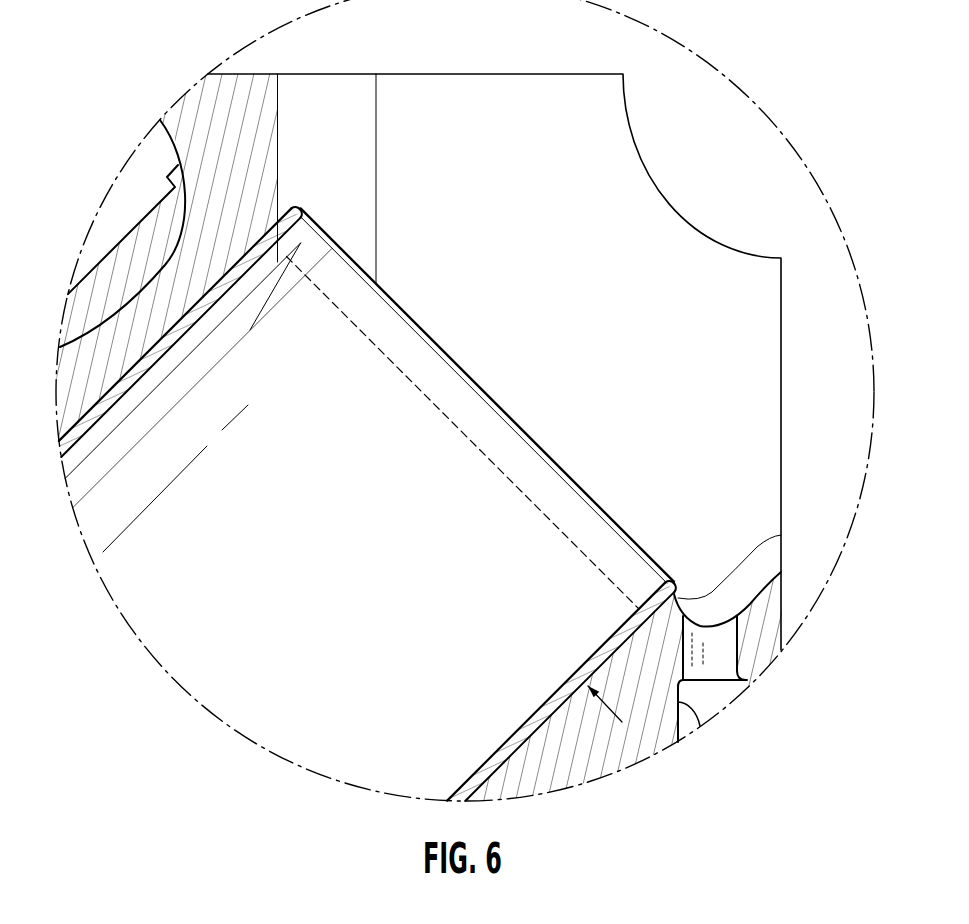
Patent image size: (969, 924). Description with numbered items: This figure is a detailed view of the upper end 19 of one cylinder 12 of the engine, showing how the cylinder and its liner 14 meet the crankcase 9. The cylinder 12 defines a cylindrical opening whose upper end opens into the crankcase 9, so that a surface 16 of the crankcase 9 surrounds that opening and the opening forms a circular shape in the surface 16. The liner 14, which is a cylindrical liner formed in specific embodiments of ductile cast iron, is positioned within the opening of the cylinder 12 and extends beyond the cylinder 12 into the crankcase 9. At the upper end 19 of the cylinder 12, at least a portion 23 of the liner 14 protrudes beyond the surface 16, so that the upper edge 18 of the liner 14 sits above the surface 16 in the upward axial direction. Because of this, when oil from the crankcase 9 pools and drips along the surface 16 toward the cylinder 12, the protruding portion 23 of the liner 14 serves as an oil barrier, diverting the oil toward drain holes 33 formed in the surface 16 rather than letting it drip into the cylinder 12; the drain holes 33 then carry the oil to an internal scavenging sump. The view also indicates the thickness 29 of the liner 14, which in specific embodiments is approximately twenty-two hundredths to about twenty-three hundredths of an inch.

The crankcase 9 is at (588, 235).
The cylinder 12 is at (88, 200).
The liner 14 is at (207, 283).
The surface 16 is at (524, 496).
The upper edge 18 is at (504, 412).
The upper end 19 is at (378, 353).
The portion 23 is at (625, 574).
The thickness 29 is at (571, 669).
The drain holes 33 is at (716, 665).